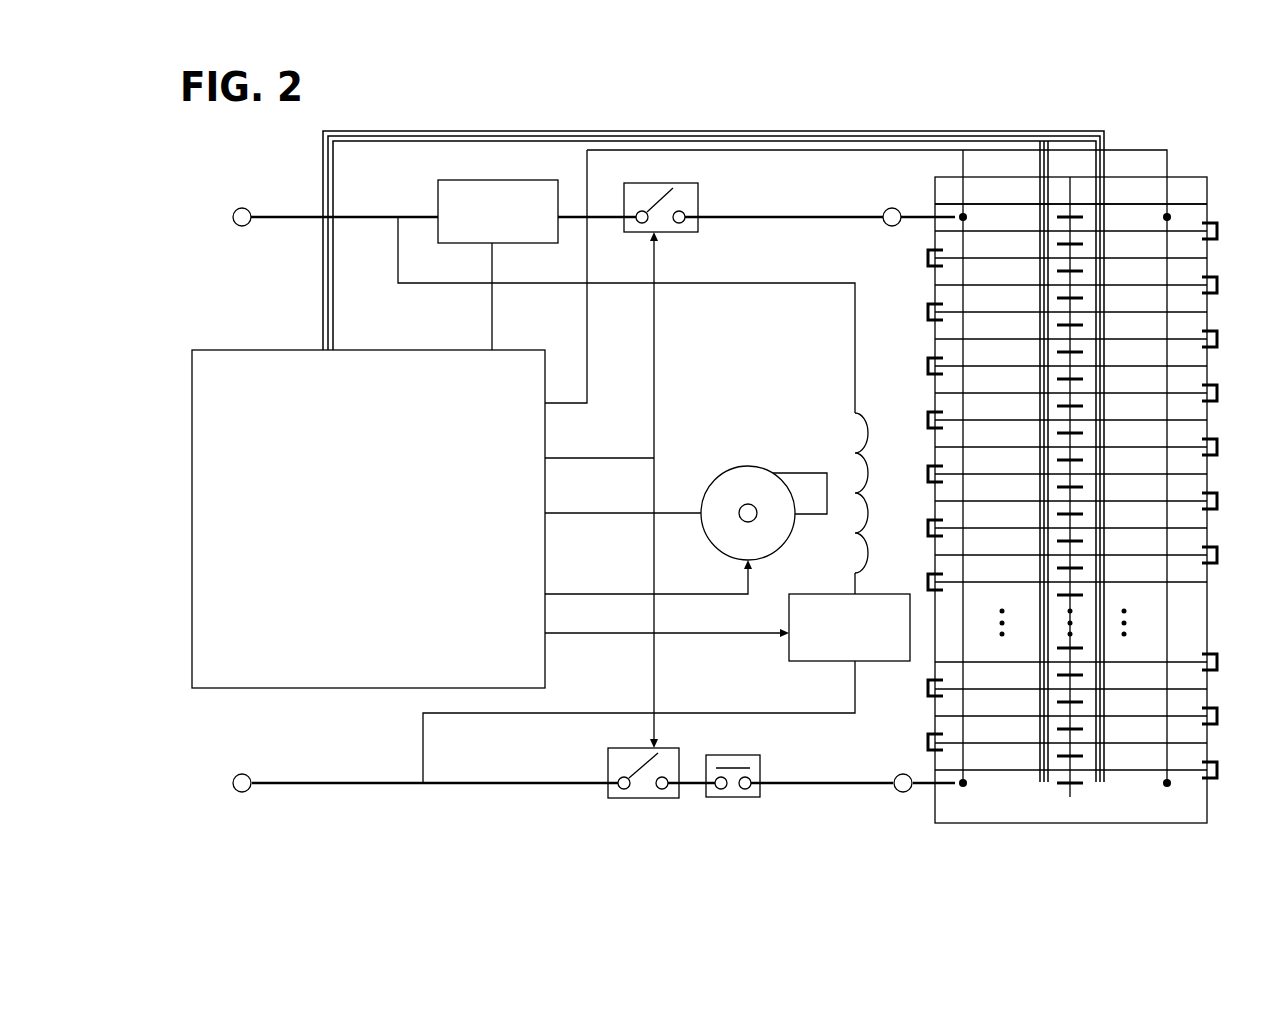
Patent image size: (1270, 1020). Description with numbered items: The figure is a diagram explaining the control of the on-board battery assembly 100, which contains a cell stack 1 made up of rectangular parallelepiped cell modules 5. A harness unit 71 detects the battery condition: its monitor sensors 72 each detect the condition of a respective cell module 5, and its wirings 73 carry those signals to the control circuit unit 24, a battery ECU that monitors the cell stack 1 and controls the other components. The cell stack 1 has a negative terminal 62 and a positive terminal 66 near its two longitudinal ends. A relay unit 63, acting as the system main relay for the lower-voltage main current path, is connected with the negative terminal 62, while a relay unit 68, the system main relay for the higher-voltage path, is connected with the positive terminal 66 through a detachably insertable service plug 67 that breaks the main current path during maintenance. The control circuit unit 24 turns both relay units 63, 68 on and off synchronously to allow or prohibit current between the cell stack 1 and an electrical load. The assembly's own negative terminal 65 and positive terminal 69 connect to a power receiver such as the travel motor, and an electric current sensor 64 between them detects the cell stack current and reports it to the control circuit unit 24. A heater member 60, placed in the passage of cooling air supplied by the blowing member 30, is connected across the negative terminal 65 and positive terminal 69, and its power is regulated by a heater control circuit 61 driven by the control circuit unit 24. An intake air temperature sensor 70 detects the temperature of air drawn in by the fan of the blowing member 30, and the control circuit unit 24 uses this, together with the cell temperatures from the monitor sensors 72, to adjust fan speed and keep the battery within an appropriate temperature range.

The cell stack 1 is at (1217, 191).
The cell module 5 is at (1197, 218).
The control circuit unit 24 is at (192, 432).
The blowing member 30 is at (798, 472).
The heater member 60 is at (868, 452).
The heater control circuit 61 is at (790, 662).
The negative terminal 62 is at (885, 209).
The relay unit 63 is at (700, 195).
The electric current sensor 64 is at (450, 180).
The negative terminal 65 is at (242, 207).
The positive terminal 66 is at (898, 800).
The service plug 67 is at (738, 799).
The relay unit 68 is at (645, 800).
The positive terminal 69 is at (240, 793).
The intake air temperature sensor 70 is at (748, 504).
The harness unit 71 is at (882, 131).
The monitor sensor 72 is at (967, 216).
The wiring 73 is at (1053, 428).
The on-board battery assembly 100 is at (1097, 437).